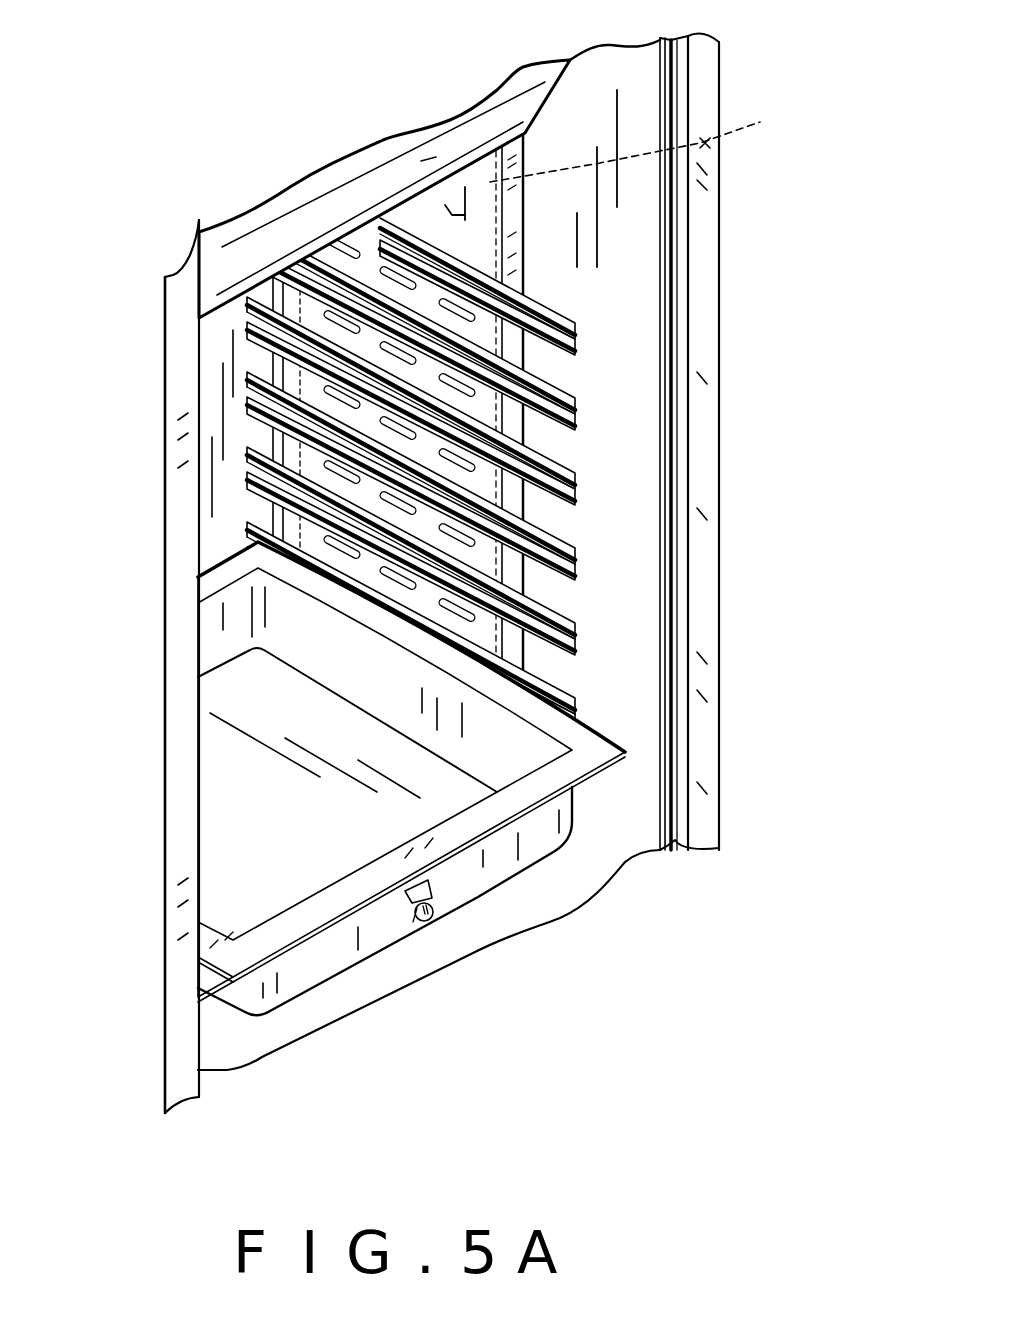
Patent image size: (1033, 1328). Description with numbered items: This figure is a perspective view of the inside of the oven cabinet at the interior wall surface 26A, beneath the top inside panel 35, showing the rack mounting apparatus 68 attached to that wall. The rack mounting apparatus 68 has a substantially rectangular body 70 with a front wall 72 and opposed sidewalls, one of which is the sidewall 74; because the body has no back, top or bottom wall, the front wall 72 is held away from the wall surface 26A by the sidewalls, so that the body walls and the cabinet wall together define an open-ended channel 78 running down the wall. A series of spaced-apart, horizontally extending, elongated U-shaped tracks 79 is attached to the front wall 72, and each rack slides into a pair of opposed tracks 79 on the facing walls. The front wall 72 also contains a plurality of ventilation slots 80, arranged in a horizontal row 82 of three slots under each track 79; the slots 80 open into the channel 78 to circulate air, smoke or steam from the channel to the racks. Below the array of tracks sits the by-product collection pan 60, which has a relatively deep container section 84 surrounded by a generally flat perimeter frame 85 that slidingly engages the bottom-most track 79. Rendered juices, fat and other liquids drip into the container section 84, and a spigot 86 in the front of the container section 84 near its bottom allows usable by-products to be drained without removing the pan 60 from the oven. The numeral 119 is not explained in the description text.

The top inside panel 35 is at (356, 172).
The aperture 119 is at (428, 158).
The interior wall surface 26A is at (620, 118).
The open-ended channel 78 is at (647, 143).
The front wall 72 is at (452, 216).
The rack mounting apparatus 68 is at (470, 244).
The body 70 is at (512, 268).
The U-shaped track 79 is at (565, 432).
The sidewall 74 is at (540, 518).
The horizontal row 82 is at (580, 595).
The ventilation slot 80 is at (465, 627).
The perimeter frame 85 is at (598, 773).
The spigot 86 is at (433, 920).
The container section 84 is at (393, 952).
The by-product collection pan 60 is at (353, 955).